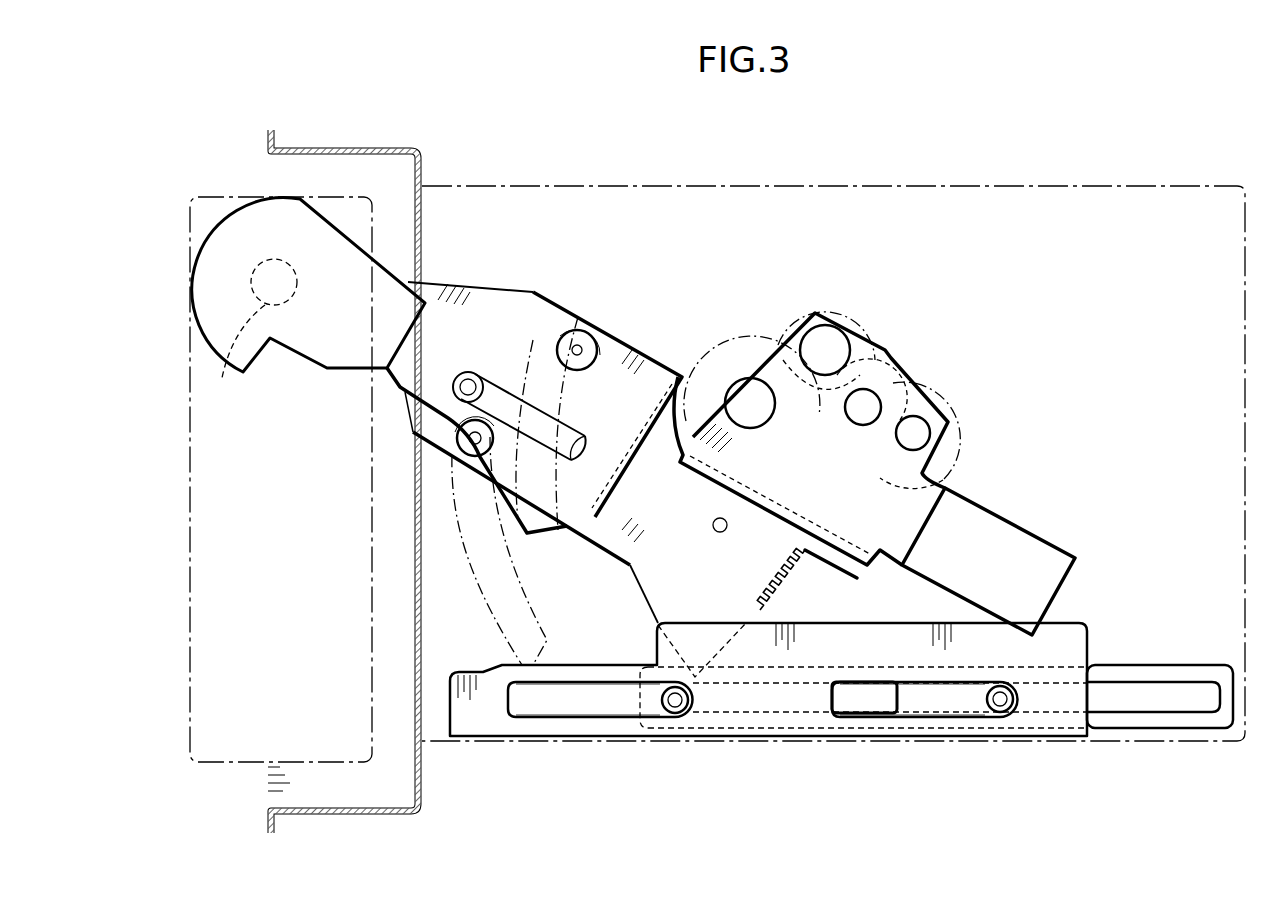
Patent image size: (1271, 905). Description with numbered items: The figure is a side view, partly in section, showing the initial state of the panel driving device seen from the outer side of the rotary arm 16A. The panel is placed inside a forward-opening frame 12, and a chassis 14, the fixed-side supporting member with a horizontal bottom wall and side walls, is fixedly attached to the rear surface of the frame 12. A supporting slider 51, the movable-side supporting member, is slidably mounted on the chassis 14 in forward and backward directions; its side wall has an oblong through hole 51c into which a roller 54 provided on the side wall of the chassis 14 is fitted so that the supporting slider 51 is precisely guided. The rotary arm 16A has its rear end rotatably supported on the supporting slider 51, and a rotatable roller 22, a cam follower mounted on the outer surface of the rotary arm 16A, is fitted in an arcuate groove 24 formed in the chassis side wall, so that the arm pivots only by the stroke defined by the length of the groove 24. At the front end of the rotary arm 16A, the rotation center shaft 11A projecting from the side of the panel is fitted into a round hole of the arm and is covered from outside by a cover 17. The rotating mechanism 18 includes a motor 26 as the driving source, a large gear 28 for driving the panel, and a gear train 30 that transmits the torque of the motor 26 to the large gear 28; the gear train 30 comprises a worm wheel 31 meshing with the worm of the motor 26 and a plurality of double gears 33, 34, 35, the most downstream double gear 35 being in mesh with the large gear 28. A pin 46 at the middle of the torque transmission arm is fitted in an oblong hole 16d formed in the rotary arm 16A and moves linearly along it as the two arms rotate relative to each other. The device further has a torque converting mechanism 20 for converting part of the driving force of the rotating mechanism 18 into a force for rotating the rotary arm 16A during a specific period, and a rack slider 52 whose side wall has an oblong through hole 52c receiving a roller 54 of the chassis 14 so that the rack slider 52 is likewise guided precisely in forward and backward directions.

The rotation center shaft 11A is at (281, 479).
The frame 12 is at (350, 147).
The chassis 14 is at (820, 185).
The rotary arm 16A is at (487, 300).
The oblong hole 16d is at (500, 400).
The cover 17 is at (305, 340).
The rotating mechanism 18 is at (990, 418).
The torque converting mechanism 20 is at (742, 750).
The roller 22 is at (578, 333).
The arcuate groove 24 is at (566, 392).
The motor 26 is at (1015, 525).
The large gear 28 is at (792, 596).
The gear train 30 is at (756, 306).
The worm wheel 31 is at (942, 380).
The double gear 33 is at (893, 352).
The double gear 34 is at (838, 300).
The double gear 35 is at (712, 336).
The pin 46 is at (460, 374).
The supporting slider 51 is at (523, 745).
The through hole 51c is at (578, 712).
The rack slider 52 is at (1152, 656).
The through hole 52c is at (853, 705).
The roller 54 is at (675, 717).